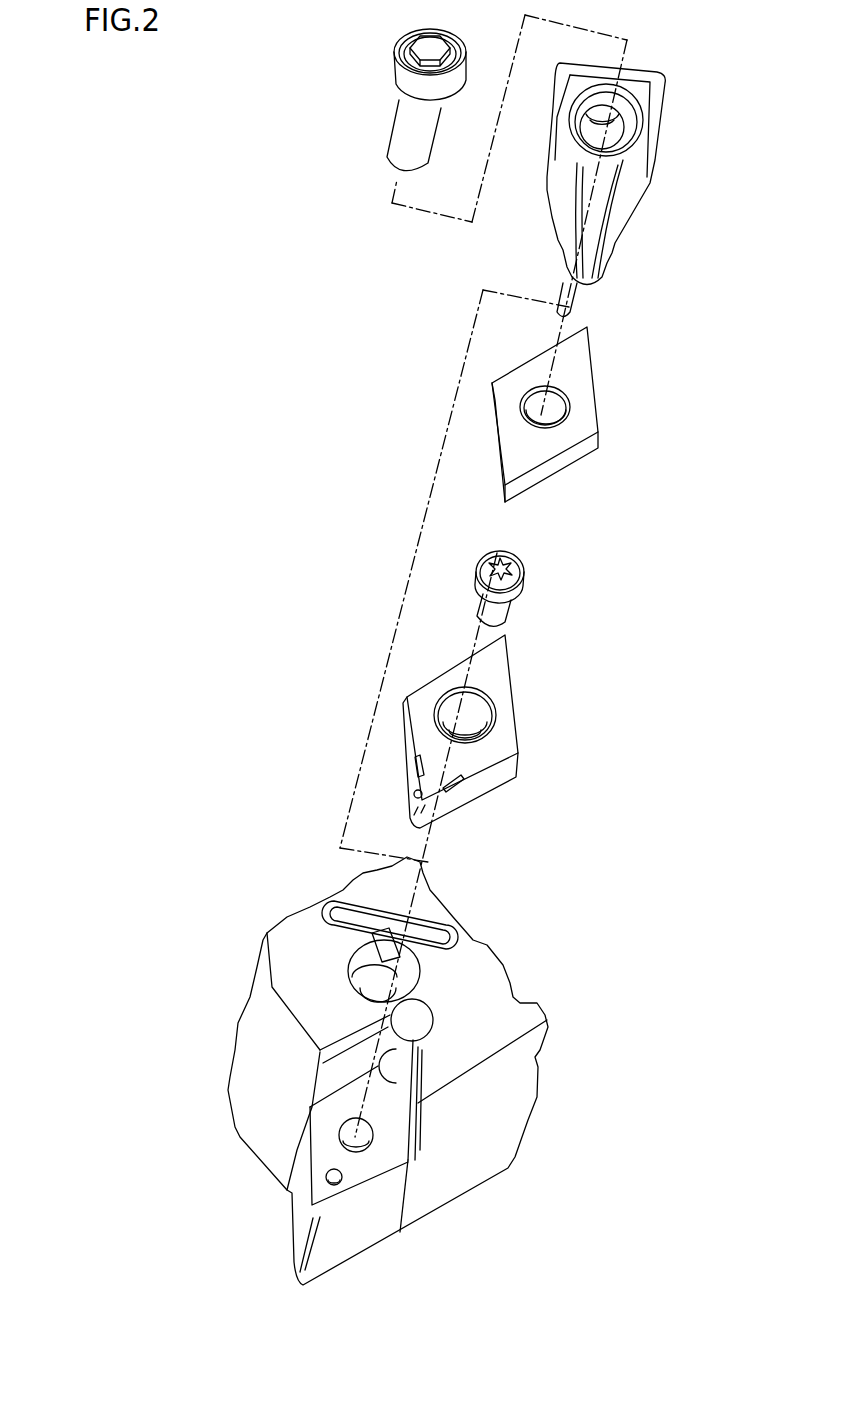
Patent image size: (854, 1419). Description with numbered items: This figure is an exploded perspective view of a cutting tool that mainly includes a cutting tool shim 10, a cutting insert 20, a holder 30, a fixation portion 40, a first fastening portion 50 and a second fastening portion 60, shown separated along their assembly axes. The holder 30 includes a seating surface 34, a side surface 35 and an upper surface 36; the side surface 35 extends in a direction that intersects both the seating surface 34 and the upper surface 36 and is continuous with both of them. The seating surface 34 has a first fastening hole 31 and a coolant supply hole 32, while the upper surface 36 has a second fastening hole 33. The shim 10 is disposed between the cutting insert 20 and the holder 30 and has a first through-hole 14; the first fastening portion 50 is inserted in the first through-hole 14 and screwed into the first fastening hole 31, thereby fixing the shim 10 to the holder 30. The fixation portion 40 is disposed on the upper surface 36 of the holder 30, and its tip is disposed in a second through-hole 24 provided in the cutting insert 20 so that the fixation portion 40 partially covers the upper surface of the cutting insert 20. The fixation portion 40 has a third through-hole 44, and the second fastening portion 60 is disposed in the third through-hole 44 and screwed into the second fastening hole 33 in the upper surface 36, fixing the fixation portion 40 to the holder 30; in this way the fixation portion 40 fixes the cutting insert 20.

The cutting tool shim 10 is at (505, 722).
The first through-hole 14 is at (490, 703).
The cutting insert 20 is at (583, 412).
The second through-hole 24 is at (565, 392).
The holder 30 is at (465, 1147).
The first fastening hole 31 is at (372, 1145).
The coolant supply hole 32 is at (327, 1177).
The second fastening hole 33 is at (410, 968).
The seating surface 34 is at (353, 1170).
The side surface 35 is at (410, 1085).
The upper surface 36 is at (490, 990).
The fixation portion 40 is at (622, 197).
The third through-hole 44 is at (615, 132).
The first fastening portion 50 is at (502, 610).
The second fastening portion 60 is at (407, 136).